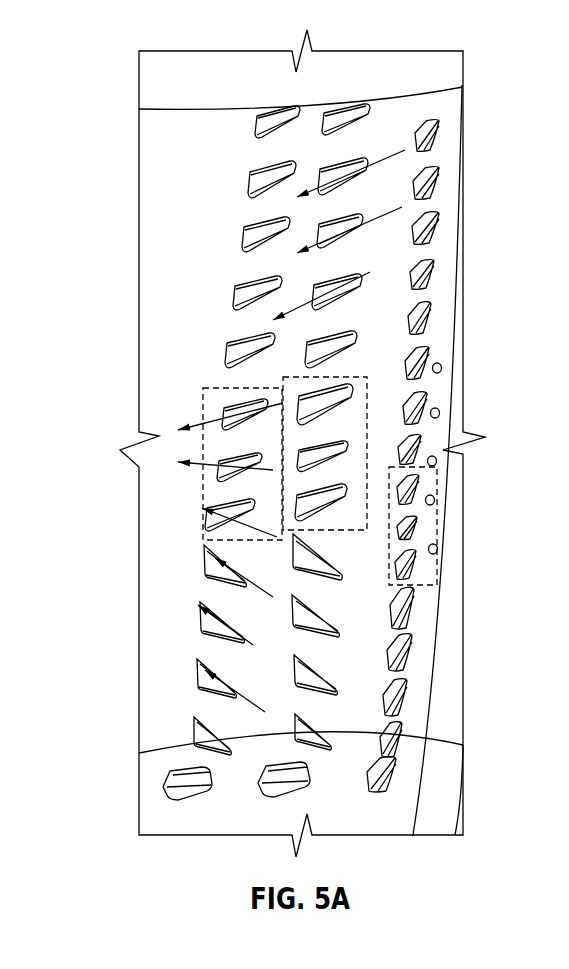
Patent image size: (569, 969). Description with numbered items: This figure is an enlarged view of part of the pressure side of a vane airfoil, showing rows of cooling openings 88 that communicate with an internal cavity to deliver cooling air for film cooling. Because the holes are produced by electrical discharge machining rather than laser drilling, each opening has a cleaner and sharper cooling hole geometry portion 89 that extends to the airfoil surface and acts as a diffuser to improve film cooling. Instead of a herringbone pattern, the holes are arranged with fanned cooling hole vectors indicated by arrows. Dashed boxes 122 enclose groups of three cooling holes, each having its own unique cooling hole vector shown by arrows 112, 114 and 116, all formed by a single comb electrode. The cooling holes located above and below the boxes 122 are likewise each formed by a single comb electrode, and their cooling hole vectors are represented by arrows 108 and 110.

The cooling openings 88 is at (273, 165).
The cooling hole geometry portion 89 is at (233, 410).
The cooling hole vector arrow 108 is at (392, 155).
The cooling hole vector arrow 110 is at (200, 605).
The cooling hole vector arrow 112 is at (200, 428).
The cooling hole vector arrow 114 is at (200, 465).
The cooling hole vector arrow 116 is at (203, 540).
The boxes 122 is at (205, 500).